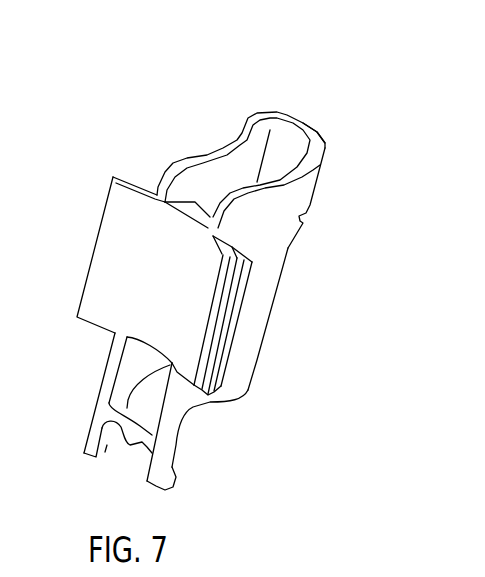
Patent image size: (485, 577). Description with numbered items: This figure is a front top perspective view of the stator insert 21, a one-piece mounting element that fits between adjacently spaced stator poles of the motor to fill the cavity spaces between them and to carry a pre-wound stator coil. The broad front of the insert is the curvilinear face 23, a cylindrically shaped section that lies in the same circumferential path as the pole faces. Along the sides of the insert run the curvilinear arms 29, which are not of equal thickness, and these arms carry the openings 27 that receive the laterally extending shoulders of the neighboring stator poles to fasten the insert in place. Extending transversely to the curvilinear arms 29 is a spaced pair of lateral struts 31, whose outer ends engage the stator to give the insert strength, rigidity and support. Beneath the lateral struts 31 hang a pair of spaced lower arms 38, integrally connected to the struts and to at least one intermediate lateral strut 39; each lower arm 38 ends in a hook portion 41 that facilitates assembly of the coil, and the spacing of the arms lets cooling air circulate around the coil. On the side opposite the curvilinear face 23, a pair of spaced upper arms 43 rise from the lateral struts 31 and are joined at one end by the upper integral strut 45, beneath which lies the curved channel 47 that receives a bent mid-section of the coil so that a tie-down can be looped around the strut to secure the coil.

The stator insert 21 is at (177, 84).
The curvilinear face 23 is at (120, 253).
The openings 27 is at (242, 268).
The curvilinear arms 29 is at (142, 187).
The lateral struts 31 is at (240, 360).
The lower arms 38 is at (107, 445).
The intermediate lateral strut 39 is at (122, 410).
The hook portion 41 is at (124, 453).
The upper arms 43 is at (208, 172).
The upper integral strut 45 is at (297, 128).
The curved channel 47 is at (300, 218).